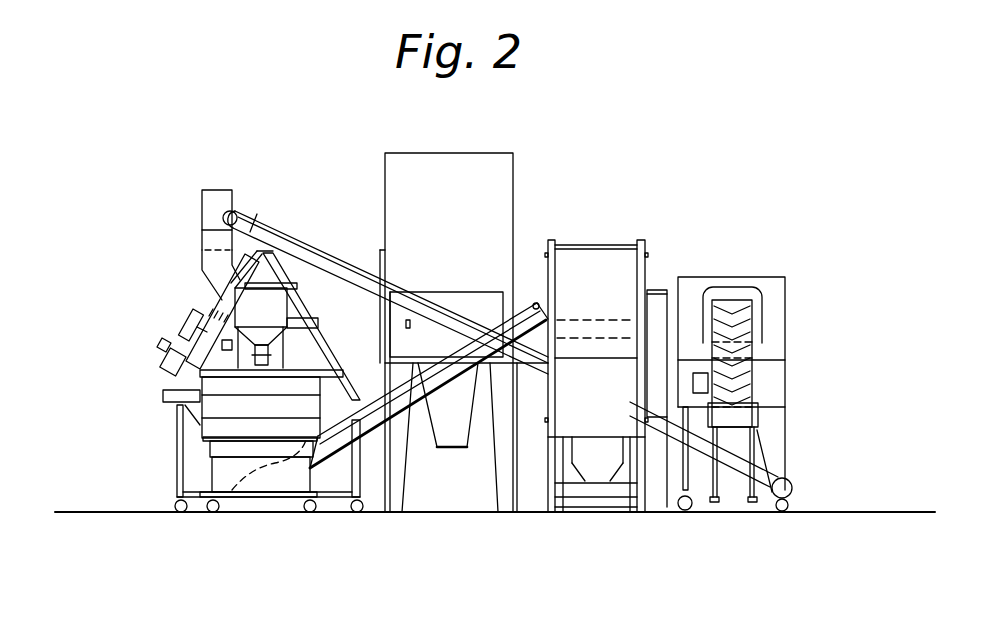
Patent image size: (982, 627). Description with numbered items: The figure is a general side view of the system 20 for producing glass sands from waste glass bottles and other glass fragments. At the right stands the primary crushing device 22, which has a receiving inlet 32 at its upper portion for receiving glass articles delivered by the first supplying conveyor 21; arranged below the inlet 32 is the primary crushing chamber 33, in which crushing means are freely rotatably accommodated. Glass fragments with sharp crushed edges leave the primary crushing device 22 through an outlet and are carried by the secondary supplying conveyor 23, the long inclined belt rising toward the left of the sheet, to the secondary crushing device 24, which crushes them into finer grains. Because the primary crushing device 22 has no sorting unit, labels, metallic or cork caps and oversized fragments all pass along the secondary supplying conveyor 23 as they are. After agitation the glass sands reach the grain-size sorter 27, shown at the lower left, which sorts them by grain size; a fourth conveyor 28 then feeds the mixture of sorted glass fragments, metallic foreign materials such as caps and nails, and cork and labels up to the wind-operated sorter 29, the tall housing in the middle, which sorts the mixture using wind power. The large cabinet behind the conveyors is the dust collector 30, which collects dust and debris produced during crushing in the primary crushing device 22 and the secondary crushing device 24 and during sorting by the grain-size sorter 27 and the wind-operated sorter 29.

The system 20 is at (704, 190).
The first supplying conveyor 21 is at (753, 378).
The primary crushing device 22 is at (787, 331).
The secondary supplying conveyor 23 is at (323, 258).
The secondary crushing device 24 is at (220, 302).
The grain-size sorter 27 is at (222, 407).
The fourth conveyor 28 is at (417, 393).
The wind-operated sorter 29 is at (595, 415).
The dust collector 30 is at (513, 225).
The receiving inlet 32 is at (733, 293).
The primary crushing chamber 33 is at (757, 393).